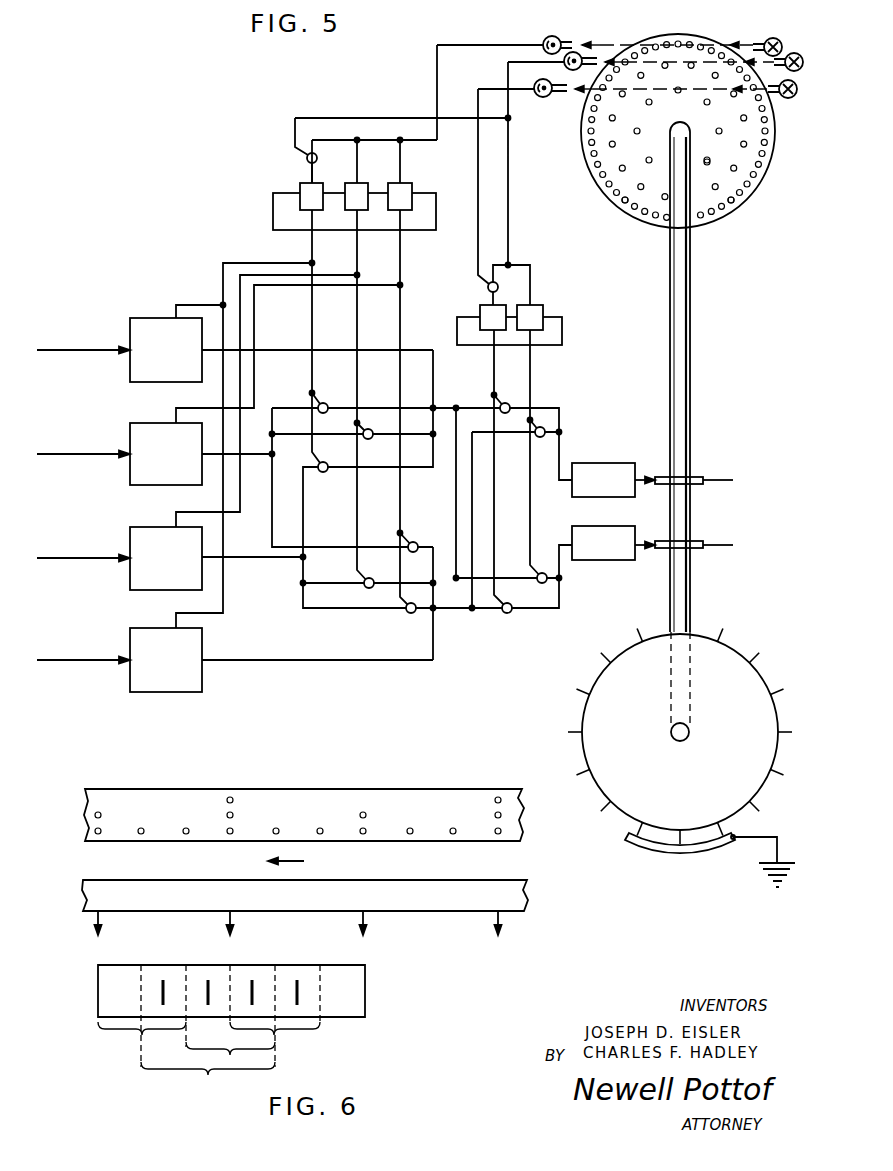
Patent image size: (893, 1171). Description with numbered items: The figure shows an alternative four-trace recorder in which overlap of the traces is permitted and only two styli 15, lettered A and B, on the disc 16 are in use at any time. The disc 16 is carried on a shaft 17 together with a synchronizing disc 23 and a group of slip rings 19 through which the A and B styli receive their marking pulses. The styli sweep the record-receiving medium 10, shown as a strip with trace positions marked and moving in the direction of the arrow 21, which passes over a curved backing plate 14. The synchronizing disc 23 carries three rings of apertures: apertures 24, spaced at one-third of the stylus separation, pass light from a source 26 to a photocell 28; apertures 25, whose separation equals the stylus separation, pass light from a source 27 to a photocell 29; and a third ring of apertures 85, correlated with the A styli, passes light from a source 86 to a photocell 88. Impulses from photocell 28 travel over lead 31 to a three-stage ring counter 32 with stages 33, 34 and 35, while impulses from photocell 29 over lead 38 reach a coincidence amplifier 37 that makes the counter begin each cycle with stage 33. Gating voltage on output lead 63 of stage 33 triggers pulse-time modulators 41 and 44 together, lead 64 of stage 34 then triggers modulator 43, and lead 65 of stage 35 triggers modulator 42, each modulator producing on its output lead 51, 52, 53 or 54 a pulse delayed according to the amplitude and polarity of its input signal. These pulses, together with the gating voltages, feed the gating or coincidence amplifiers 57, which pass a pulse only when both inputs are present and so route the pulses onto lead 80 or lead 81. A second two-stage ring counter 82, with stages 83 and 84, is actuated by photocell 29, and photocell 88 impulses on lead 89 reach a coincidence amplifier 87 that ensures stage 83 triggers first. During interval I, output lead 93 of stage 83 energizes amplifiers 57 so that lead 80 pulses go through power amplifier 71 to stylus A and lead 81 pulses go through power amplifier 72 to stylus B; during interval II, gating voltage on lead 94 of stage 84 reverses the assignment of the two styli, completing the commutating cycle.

In FIG. 5, the record-receiving medium 10 is at (655, 838).
In FIG. 6, the record-receiving medium 10 is at (365, 993).
In FIG. 5, the backing plate 14 is at (688, 856).
In FIG. 5, the styli 15 is at (772, 778).
In FIG. 6, the styli 15 is at (494, 931).
In FIG. 5, the disc 16 is at (732, 650).
In FIG. 6, the disc 16 is at (84, 891).
In FIG. 5, the shaft 17 is at (691, 344).
In FIG. 5, the slip rings 19 is at (662, 477).
In FIG. 6, the direction of tape motion 21 is at (300, 862).
In FIG. 5, the synchronizing disc 23 is at (672, 36).
In FIG. 6, the synchronizing disc 23 is at (87, 813).
In FIG. 5, the apertures 24 is at (634, 210).
In FIG. 6, the apertures 24 is at (188, 828).
In FIG. 5, the apertures 25 is at (702, 197).
In FIG. 6, the apertures 25 is at (360, 812).
In FIG. 5, the light source 26 is at (767, 40).
In FIG. 5, the light source 27 is at (792, 53).
In FIG. 5, the photocell 28 is at (548, 37).
In FIG. 5, the photocell 29 is at (576, 52).
In FIG. 5, the lead 31 is at (437, 77).
In FIG. 5, the ring counter 32 is at (273, 203).
In FIG. 5, the counter stage 33 is at (321, 183).
In FIG. 5, the counter stage 34 is at (366, 183).
In FIG. 5, the counter stage 35 is at (409, 183).
In FIG. 5, the coincidence amplifier 37 is at (306, 156).
In FIG. 5, the lead 38 is at (372, 118).
In FIG. 5, the pulse-time modulator 41 is at (155, 318).
In FIG. 5, the pulse-time modulator 42 is at (165, 423).
In FIG. 5, the pulse-time modulator 43 is at (157, 527).
In FIG. 5, the pulse-time modulator 44 is at (155, 628).
In FIG. 5, the output lead 51 is at (270, 350).
In FIG. 5, the output lead 52 is at (252, 447).
In FIG. 5, the output lead 53 is at (235, 557).
In FIG. 5, the output lead 54 is at (238, 660).
In FIG. 5, the gating amplifiers 57 is at (364, 438).
In FIG. 5, the output lead 63 is at (318, 379).
In FIG. 5, the output lead 64 is at (361, 379).
In FIG. 5, the output lead 65 is at (403, 339).
In FIG. 5, the power amplifier 71 is at (586, 463).
In FIG. 5, the power amplifier 72 is at (614, 526).
In FIG. 5, the lead 80 is at (447, 406).
In FIG. 5, the lead 81 is at (448, 612).
In FIG. 5, the ring counter 82 is at (562, 323).
In FIG. 5, the counter stage 83 is at (478, 305).
In FIG. 5, the counter stage 84 is at (538, 306).
In FIG. 5, the apertures 85 is at (710, 163).
In FIG. 6, the apertures 85 is at (232, 798).
In FIG. 5, the light source 86 is at (790, 99).
In FIG. 5, the coincidence amplifier 87 is at (486, 285).
In FIG. 5, the photocell 88 is at (547, 98).
In FIG. 5, the lead 89 is at (470, 186).
In FIG. 5, the output lead 93 is at (497, 520).
In FIG. 5, the output lead 94 is at (534, 530).